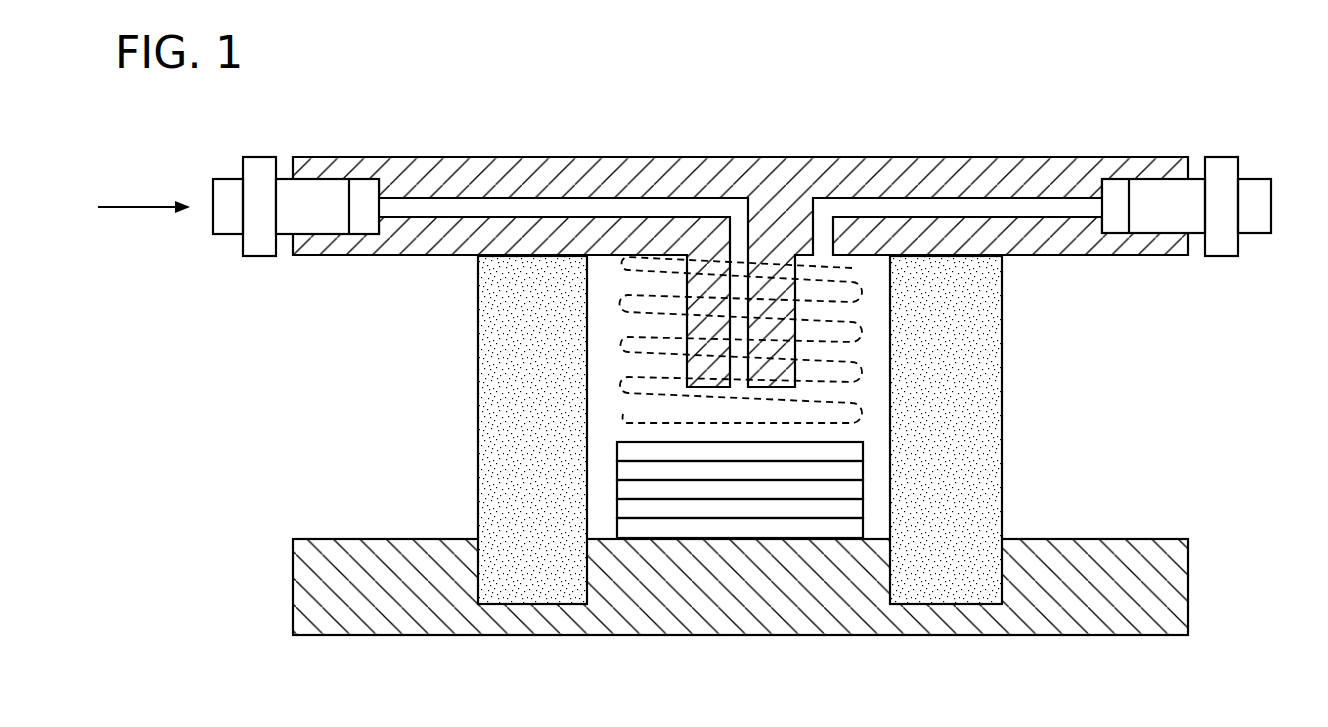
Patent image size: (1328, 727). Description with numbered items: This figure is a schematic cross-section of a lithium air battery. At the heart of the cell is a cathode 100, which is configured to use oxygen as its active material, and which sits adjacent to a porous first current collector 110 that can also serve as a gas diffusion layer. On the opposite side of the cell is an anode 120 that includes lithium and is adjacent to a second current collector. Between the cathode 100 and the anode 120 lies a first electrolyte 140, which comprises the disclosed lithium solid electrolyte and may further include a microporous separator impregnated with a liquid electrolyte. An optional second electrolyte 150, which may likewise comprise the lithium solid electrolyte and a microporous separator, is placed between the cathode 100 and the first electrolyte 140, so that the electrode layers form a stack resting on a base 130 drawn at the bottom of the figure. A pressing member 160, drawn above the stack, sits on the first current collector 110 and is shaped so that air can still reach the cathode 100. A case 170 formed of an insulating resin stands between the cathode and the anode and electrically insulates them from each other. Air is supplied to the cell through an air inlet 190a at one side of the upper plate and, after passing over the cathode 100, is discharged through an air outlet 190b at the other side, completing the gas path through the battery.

The cathode 100 is at (858, 470).
The first current collector 110 is at (858, 448).
The anode 120 is at (858, 532).
The base plate 130 is at (307, 583).
The first electrolyte 140 is at (858, 508).
The second electrolyte 150 is at (858, 490).
The pressing member 160 is at (850, 332).
The case 170 is at (498, 405).
The air inlet 190a is at (227, 228).
The air outlet 190b is at (1250, 234).